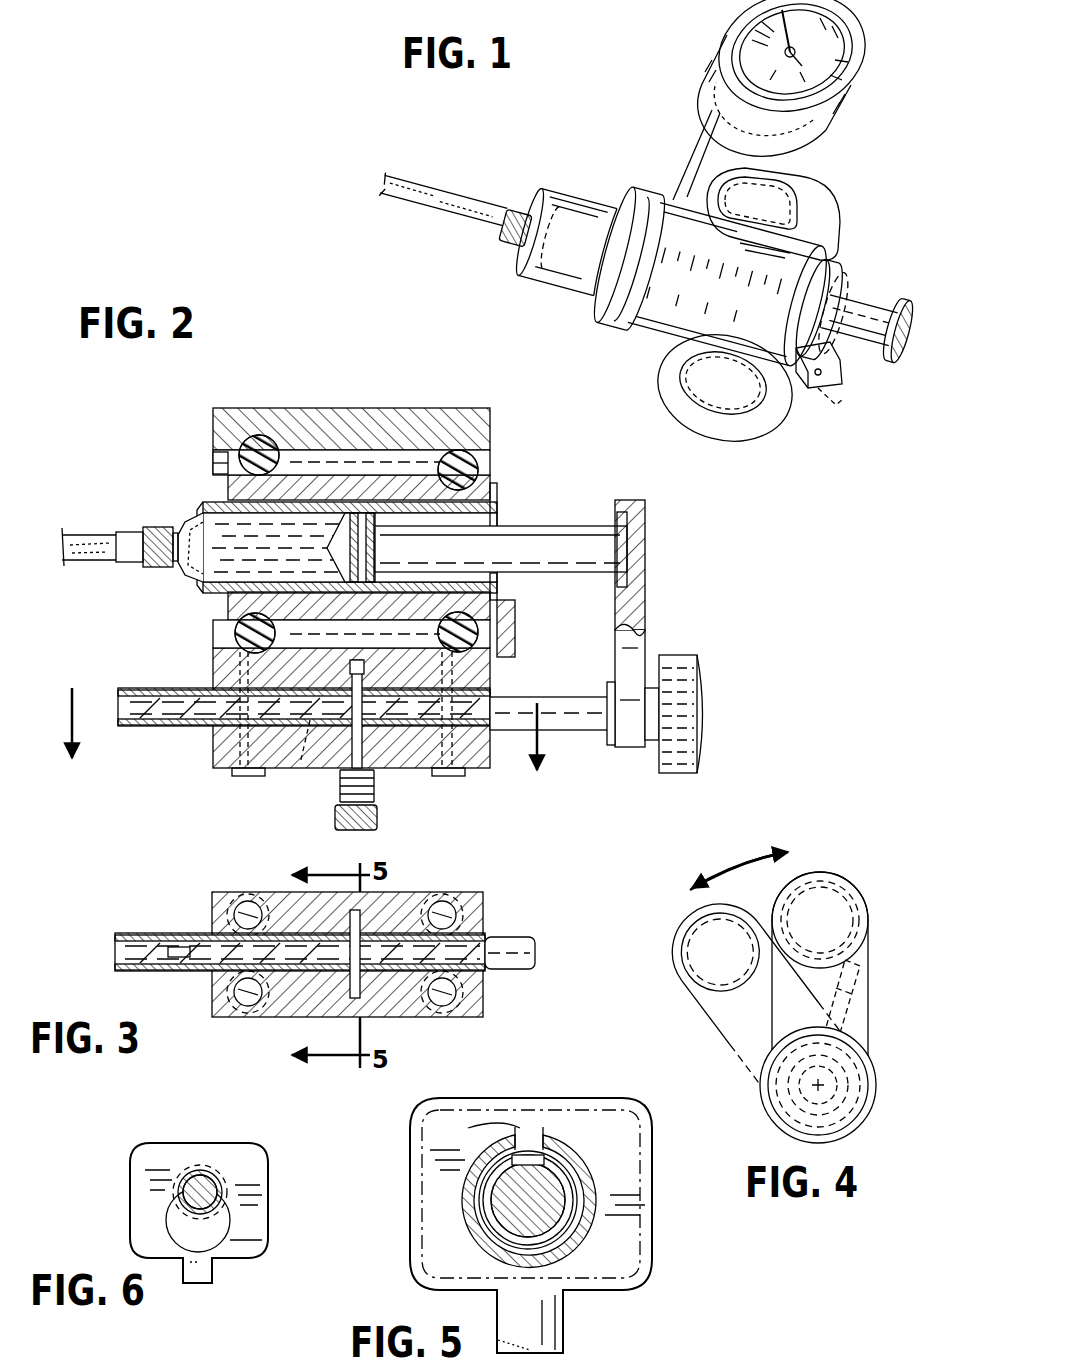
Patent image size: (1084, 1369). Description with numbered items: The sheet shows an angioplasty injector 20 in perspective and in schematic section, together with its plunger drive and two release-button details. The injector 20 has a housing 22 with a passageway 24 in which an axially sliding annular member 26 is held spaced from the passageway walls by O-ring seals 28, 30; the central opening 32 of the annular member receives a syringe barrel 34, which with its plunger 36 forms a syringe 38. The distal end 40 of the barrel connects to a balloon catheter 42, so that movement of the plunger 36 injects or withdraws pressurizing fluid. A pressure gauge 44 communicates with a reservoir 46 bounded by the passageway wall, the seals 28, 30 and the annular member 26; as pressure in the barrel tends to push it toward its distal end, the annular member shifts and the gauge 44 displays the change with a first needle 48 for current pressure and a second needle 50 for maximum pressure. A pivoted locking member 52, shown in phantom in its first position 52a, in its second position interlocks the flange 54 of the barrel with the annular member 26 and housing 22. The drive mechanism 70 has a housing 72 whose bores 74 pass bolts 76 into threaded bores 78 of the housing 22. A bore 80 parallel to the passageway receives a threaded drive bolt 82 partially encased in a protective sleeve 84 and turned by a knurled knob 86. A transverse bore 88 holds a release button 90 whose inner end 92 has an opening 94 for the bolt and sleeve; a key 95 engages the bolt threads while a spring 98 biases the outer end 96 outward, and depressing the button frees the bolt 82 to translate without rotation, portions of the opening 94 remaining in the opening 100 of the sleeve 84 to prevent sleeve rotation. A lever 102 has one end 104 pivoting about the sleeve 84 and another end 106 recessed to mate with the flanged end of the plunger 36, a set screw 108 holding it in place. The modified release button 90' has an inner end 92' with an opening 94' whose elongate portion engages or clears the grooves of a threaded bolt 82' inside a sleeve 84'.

In FIG. 1, the angioplasty injector 20 is at (656, 237).
In FIG. 2, the angioplasty injector 20 is at (389, 610).
In FIG. 1, the housing 22 is at (625, 335).
In FIG. 2, the housing 22 is at (500, 430).
In FIG. 2, the passageway 24 is at (353, 585).
In FIG. 2, the annular member 26 is at (226, 487).
In FIG. 2, the O-ring seal 28 is at (216, 462).
In FIG. 2, the O-ring seal 30 is at (475, 466).
In FIG. 2, the central opening 32 is at (498, 484).
In FIG. 1, the syringe barrel 34 is at (850, 276).
In FIG. 2, the syringe barrel 34 is at (198, 580).
In FIG. 1, the syringe plunger 36 is at (906, 316).
In FIG. 2, the syringe plunger 36 is at (568, 545).
In FIG. 4, the syringe plunger 36 is at (833, 932).
In FIG. 1, the syringe 38 is at (865, 332).
In FIG. 2, the syringe 38 is at (477, 520).
In FIG. 2, the distal end 40 is at (158, 566).
In FIG. 1, the balloon catheter 42 is at (483, 208).
In FIG. 2, the balloon catheter 42 is at (97, 532).
In FIG. 1, the pressure gauge 44 is at (732, 40).
In FIG. 2, the reservoir 46 is at (385, 462).
In FIG. 1, the first needle 48 is at (798, 78).
In FIG. 1, the second needle 50 is at (805, 36).
In FIG. 1, the locking member 52 is at (845, 378).
In FIG. 2, the locking member 52 is at (516, 627).
In FIG. 1, the first position 52a is at (830, 410).
In FIG. 1, the flange 54 is at (882, 370).
In FIG. 2, the flange 54 is at (498, 504).
In FIG. 2, the drive mechanism 70 is at (427, 744).
In FIG. 3, the drive mechanism 70 is at (315, 956).
In FIG. 2, the housing 72 is at (470, 746).
In FIG. 3, the housing 72 is at (484, 895).
In FIG. 2, the bores 74 is at (213, 770).
In FIG. 2, the bolts 76 is at (246, 777).
In FIG. 3, the bolts 76 is at (250, 902).
In FIG. 2, the threaded bores 78 is at (262, 433).
In FIG. 2, the bore 80 is at (315, 715).
In FIG. 2, the threaded drive bolt 82 is at (304, 687).
In FIG. 3, the threaded drive bolt 82 is at (300, 973).
In FIG. 4, the threaded drive bolt 82 is at (862, 1085).
In FIG. 5, the threaded drive bolt 82 is at (528, 1196).
In FIG. 2, the protective sleeve 84 is at (549, 691).
In FIG. 3, the protective sleeve 84 is at (527, 935).
In FIG. 4, the protective sleeve 84 is at (793, 1101).
In FIG. 5, the protective sleeve 84 is at (556, 1200).
In FIG. 2, the knurled knob 86 is at (690, 656).
In FIG. 4, the knurled knob 86 is at (838, 1136).
In FIG. 2, the bore 88 is at (352, 738).
In FIG. 2, the release button 90 is at (376, 761).
In FIG. 5, the release button 90 is at (539, 1207).
In FIG. 3, the inner end 92 is at (395, 930).
In FIG. 5, the inner end 92 is at (531, 1204).
In FIG. 5, the opening 94 is at (544, 1197).
In FIG. 5, the key 95 is at (486, 1128).
In FIG. 2, the outer end 96 is at (354, 831).
In FIG. 2, the spring 98 is at (376, 782).
In FIG. 3, the opening 100 is at (187, 946).
In FIG. 2, the lever 102 is at (648, 600).
In FIG. 4, the lever 102 is at (790, 965).
In FIG. 2, the one end 104 is at (628, 750).
In FIG. 4, the one end 104 is at (870, 1110).
In FIG. 4, the other end 106 is at (838, 880).
In FIG. 4, the set screw 108 is at (850, 1010).
In FIG. 6, the threaded bolt 82' is at (197, 1155).
In FIG. 6, the sleeve 84' is at (244, 1198).
In FIG. 6, the release button 90' is at (228, 1207).
In FIG. 6, the inner end 92' is at (216, 1197).
In FIG. 6, the opening 94' is at (198, 1220).